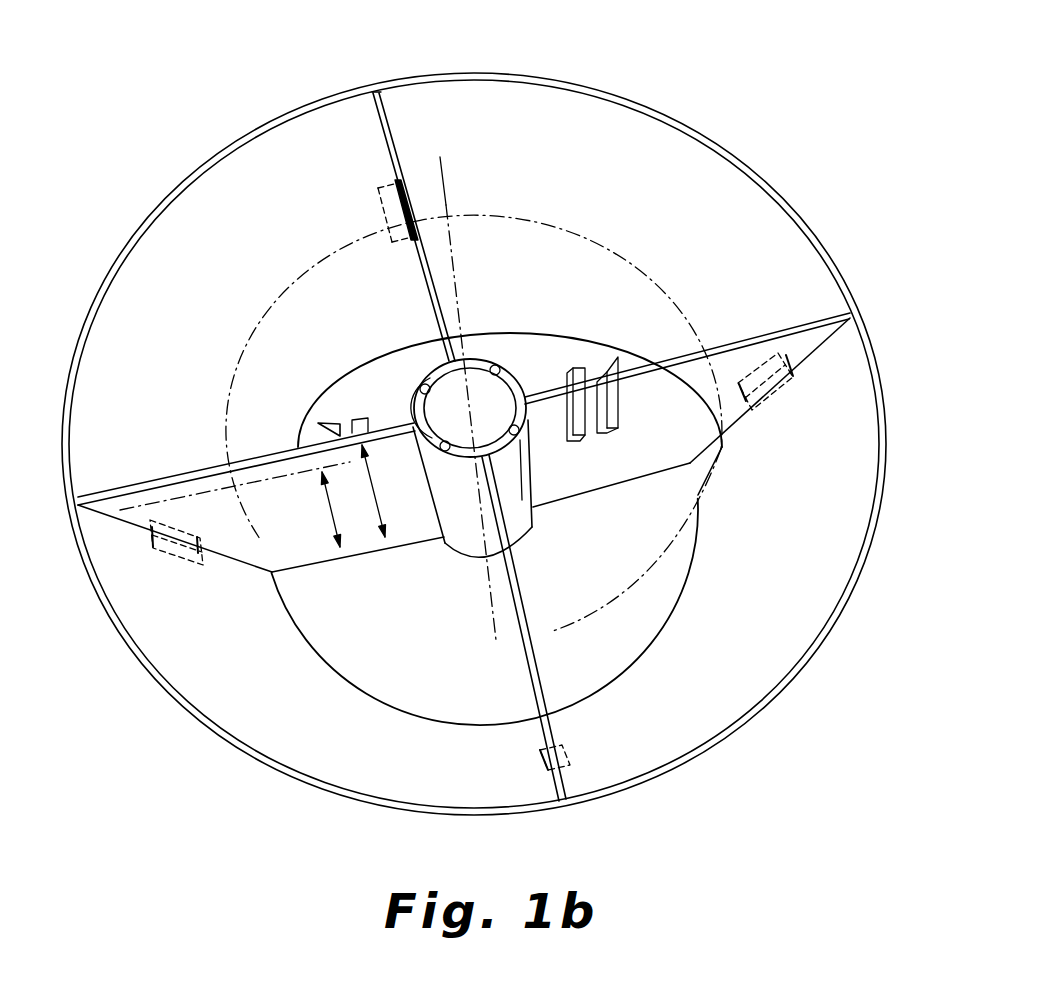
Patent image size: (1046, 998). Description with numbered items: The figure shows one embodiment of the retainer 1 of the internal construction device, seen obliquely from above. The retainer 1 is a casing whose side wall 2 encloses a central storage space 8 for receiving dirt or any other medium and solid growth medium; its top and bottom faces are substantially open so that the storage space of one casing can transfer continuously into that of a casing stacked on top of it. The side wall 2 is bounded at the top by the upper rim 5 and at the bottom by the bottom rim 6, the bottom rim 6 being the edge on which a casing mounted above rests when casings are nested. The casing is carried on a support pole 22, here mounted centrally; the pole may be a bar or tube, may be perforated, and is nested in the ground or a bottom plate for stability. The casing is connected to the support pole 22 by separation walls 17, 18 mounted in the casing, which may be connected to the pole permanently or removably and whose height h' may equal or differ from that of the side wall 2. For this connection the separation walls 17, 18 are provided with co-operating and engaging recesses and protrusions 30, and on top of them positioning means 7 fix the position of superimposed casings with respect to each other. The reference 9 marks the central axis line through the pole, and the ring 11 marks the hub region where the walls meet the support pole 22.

The retainer 1 is at (499, 476).
The side wall 2 is at (750, 657).
The upper rim 5 is at (883, 517).
The bottom rim 6 is at (300, 633).
The positioning means 7 is at (338, 419).
The central storage space 8 is at (575, 267).
The axis of rotation 9 is at (460, 283).
The hub ring 11 is at (428, 388).
The separation wall 17 is at (390, 127).
The separation wall 18 is at (185, 477).
The support pole 22 is at (537, 473).
The recesses and protrusions 30 is at (180, 553).